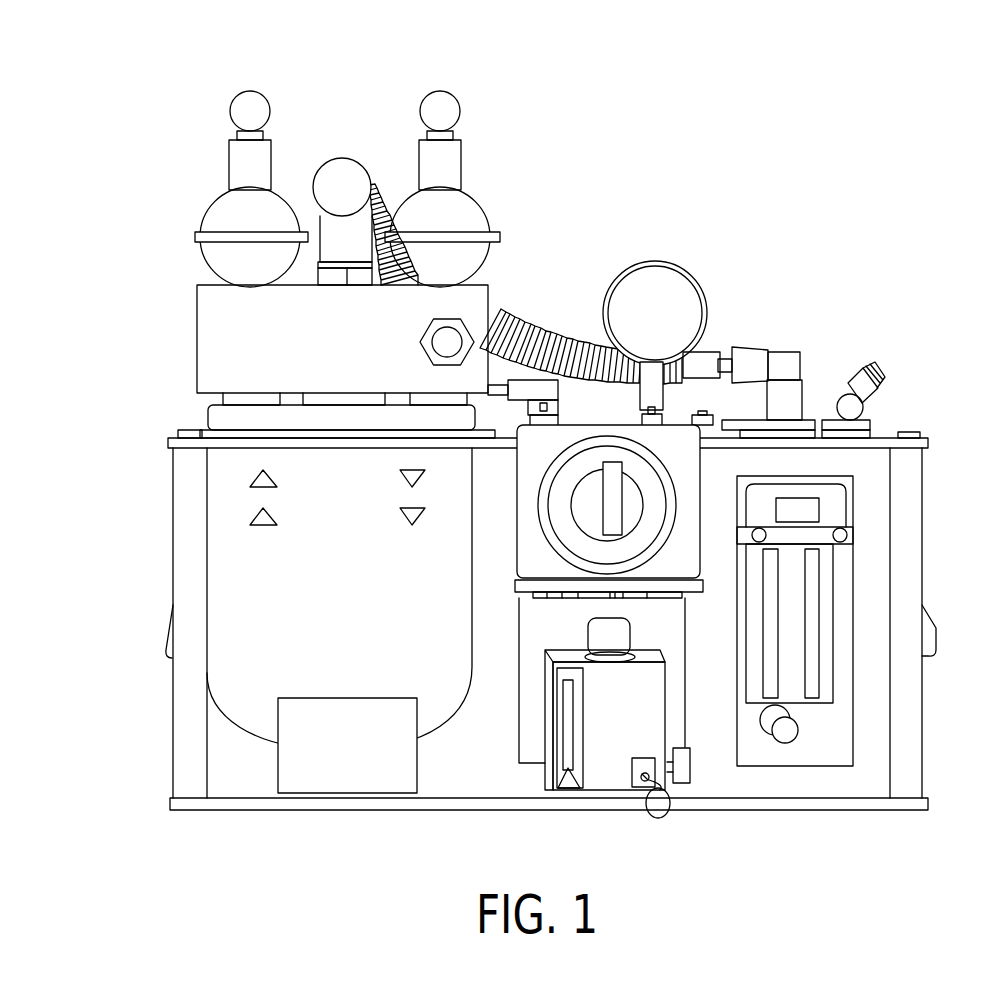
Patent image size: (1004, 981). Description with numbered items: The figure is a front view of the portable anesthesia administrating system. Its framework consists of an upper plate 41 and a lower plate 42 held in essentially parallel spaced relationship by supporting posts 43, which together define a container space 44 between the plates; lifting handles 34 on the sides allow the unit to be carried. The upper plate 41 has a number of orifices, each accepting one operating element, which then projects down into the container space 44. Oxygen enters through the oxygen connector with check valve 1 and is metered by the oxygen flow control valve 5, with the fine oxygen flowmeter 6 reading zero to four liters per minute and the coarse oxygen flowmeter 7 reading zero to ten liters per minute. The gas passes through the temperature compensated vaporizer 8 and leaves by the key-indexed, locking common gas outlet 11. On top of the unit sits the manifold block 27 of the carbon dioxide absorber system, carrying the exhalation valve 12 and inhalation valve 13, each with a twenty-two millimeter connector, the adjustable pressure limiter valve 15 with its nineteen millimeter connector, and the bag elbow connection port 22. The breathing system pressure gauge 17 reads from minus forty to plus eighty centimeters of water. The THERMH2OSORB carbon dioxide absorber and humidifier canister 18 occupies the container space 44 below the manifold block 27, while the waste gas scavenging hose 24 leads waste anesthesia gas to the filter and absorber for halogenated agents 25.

The oxygen connector with check valve 1 is at (877, 375).
The oxygen flow control valve 5 is at (785, 732).
The oxygen flowmeter, fine 6 is at (768, 668).
The oxygen flowmeter, coarse 7 is at (810, 680).
The vaporizer 8 is at (598, 778).
The common gas outlet 11 is at (535, 410).
The exhalation valve 12 is at (440, 130).
The inhalation valve 13 is at (250, 130).
The adjustable pressure limiter (APL) valve 15 is at (338, 198).
The pressure gauge, breathing system 17 is at (655, 263).
The CO2 absorber/humidifier canister 18 is at (235, 565).
The bag elbow connection port 22 is at (439, 338).
The waste gas scavenging hose 24 is at (582, 347).
The filter/absorber for waste anesthesia gas 25 is at (807, 428).
The manifold block 27 is at (208, 370).
The lifting handles 34 is at (168, 633).
The upper plate 41 is at (888, 433).
The lower plate 42 is at (868, 800).
The supporting posts 43 is at (190, 730).
The container space 44 is at (457, 783).